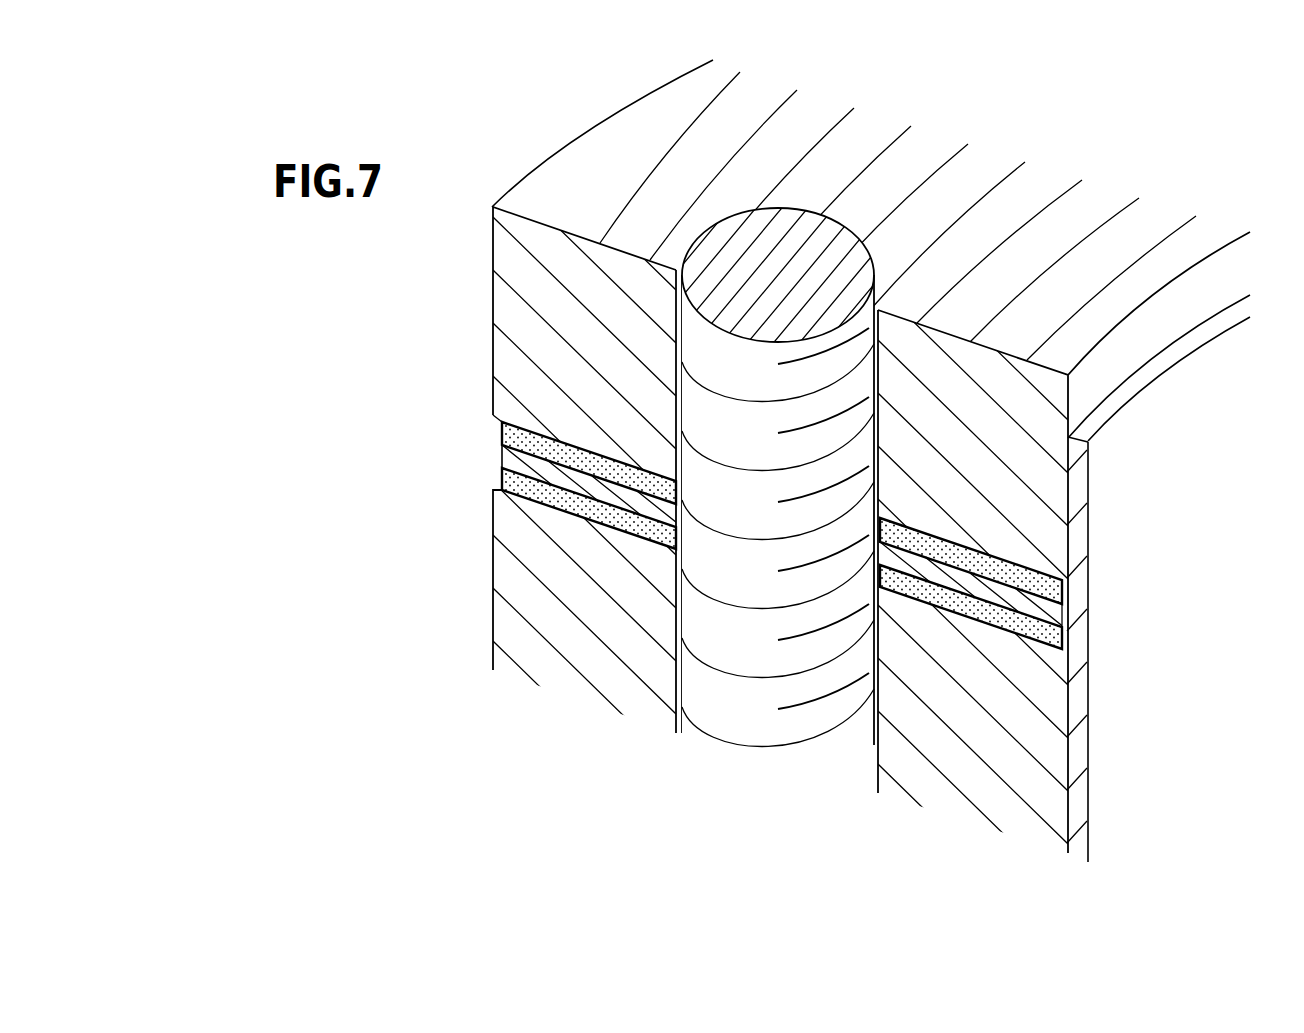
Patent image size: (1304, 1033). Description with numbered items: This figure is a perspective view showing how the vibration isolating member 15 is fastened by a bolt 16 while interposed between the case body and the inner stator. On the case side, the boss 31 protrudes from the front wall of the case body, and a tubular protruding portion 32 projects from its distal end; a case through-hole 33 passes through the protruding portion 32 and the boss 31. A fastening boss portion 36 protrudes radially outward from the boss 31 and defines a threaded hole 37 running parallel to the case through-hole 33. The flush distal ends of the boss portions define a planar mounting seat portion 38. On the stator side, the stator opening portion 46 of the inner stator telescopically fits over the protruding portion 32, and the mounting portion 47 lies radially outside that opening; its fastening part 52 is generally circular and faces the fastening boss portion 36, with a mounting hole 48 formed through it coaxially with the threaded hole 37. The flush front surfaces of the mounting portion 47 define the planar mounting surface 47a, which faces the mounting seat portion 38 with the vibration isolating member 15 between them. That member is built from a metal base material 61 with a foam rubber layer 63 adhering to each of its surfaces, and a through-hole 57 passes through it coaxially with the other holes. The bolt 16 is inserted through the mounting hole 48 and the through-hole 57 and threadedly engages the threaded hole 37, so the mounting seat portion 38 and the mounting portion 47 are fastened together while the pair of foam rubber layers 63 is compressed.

The mounting portion 47 is at (550, 142).
The stator opening portion 46 is at (1200, 298).
The protruding portion 32 is at (1147, 372).
The case through-hole 33 is at (1175, 458).
The fastening part 52 is at (510, 309).
The boss 31 is at (509, 598).
The fastening boss portion 36 is at (520, 593).
The mounting hole 48 is at (690, 401).
The foam rubber layer 63 is at (556, 500).
The metal base material 61 is at (654, 508).
The vibration isolating member 15 is at (495, 456).
The bolt 16 is at (761, 488).
The threaded hole 37 is at (692, 705).
The through-hole 57 is at (872, 500).
The mounting surface 47a is at (1065, 590).
The mounting seat portion 38 is at (1045, 637).